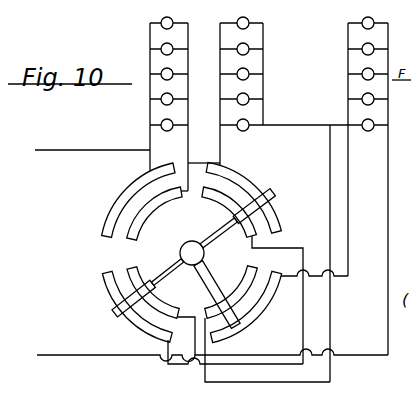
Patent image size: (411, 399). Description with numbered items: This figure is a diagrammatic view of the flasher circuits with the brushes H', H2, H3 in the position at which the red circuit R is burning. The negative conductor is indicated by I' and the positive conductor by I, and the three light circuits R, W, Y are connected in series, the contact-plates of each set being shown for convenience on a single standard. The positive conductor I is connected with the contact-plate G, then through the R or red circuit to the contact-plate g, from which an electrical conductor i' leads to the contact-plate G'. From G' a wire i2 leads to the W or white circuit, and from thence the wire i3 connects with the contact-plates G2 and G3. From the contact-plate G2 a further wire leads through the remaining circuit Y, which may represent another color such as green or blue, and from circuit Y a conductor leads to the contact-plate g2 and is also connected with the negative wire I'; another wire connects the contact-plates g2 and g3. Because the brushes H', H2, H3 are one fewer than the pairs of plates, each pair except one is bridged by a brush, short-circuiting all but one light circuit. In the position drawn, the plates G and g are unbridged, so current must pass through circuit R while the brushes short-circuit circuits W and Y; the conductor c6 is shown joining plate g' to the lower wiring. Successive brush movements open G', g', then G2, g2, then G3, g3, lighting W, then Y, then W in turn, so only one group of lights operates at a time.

The positive conductor I is at (92, 142).
The negative conductor I' is at (212, 370).
The red circuit R is at (169, 104).
The white circuit W is at (284, 199).
The remaining circuit Y is at (368, 186).
The contact-plate G is at (130, 200).
The contact-plate g is at (154, 213).
The contact-plate G' is at (243, 194).
The contact-plate g' is at (248, 210).
The contact-plate G2 is at (277, 297).
The contact-plate g2 is at (240, 296).
The contact-plate G3 is at (103, 292).
The contact-plate g3 is at (130, 268).
The rotating brush arm H' is at (237, 227).
The rotating brush arm H2 is at (211, 287).
The rotating brush arm H3 is at (164, 259).
The electrical conductor i' is at (191, 163).
The wire i2 is at (204, 126).
The wire i3 is at (326, 165).
The conductor c6 is at (288, 247).